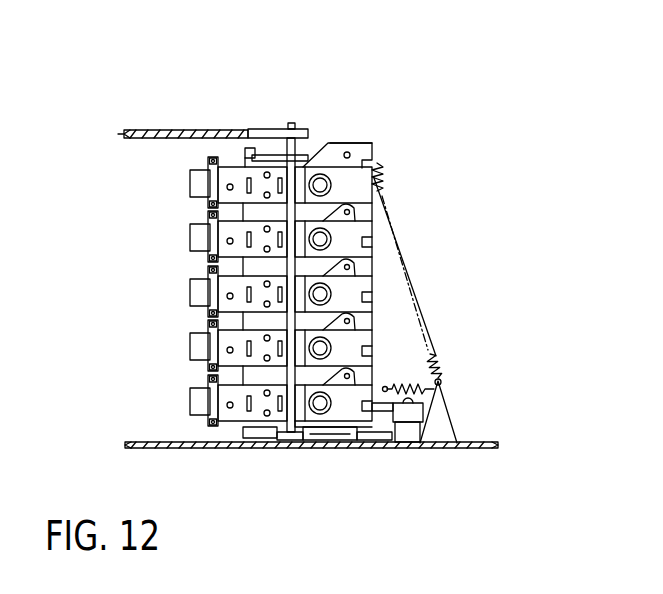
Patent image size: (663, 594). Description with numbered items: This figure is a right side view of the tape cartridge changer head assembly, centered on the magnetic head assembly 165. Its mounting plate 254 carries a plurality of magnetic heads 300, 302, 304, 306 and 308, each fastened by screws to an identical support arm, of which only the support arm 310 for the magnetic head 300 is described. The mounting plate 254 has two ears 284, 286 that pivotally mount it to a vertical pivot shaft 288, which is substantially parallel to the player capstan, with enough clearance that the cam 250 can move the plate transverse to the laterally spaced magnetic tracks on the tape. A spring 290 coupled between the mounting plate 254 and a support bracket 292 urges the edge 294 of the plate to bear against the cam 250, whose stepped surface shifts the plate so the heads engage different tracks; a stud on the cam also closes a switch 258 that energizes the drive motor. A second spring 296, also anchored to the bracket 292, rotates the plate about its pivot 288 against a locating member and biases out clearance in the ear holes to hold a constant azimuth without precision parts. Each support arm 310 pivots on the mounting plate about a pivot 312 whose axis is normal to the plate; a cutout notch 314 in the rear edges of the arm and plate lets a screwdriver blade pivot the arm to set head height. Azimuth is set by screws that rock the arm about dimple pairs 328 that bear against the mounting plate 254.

The magnetic head assembly 165 is at (367, 132).
The cam 250 is at (335, 440).
The mounting plate 254 is at (368, 155).
The switch 258 is at (408, 442).
The ear 284 is at (277, 158).
The ear 286 is at (280, 436).
The vertical pivot shaft 288 is at (292, 125).
The spring 290 is at (437, 360).
The support bracket 292 is at (440, 415).
The edge 294 is at (258, 433).
The second spring 296 is at (407, 383).
The magnetic head 300 is at (195, 190).
The magnetic head 302 is at (195, 243).
The magnetic head 304 is at (196, 297).
The magnetic head 306 is at (197, 350).
The magnetic head 308 is at (197, 405).
The support arm 310 is at (280, 173).
The pivot 312 is at (322, 185).
The cutout notch 314 is at (378, 192).
The dimple pairs 328 is at (213, 132).